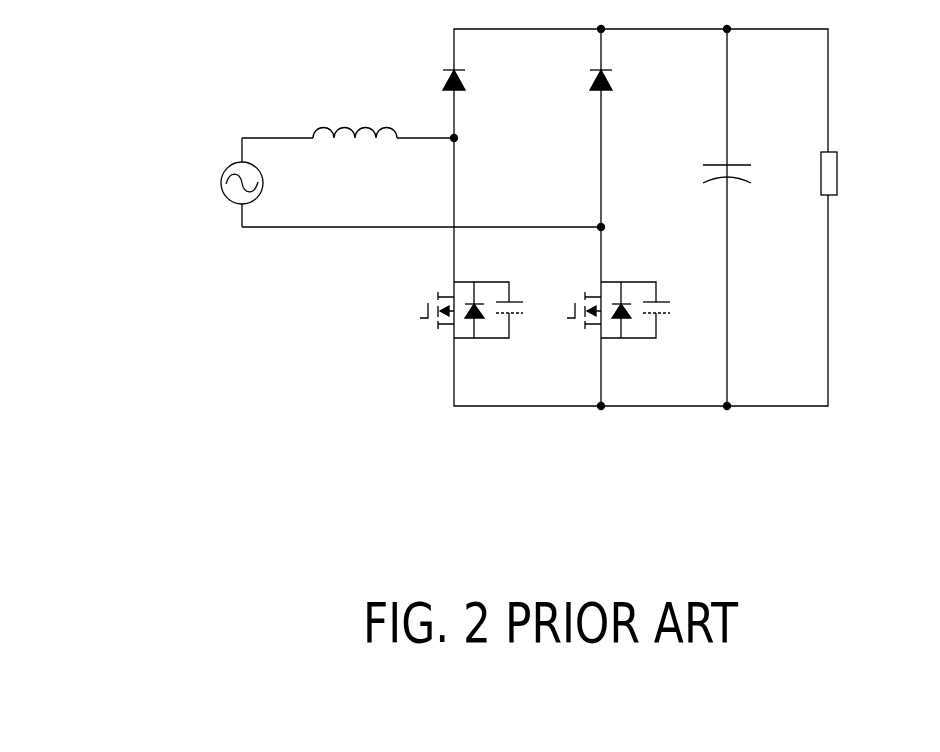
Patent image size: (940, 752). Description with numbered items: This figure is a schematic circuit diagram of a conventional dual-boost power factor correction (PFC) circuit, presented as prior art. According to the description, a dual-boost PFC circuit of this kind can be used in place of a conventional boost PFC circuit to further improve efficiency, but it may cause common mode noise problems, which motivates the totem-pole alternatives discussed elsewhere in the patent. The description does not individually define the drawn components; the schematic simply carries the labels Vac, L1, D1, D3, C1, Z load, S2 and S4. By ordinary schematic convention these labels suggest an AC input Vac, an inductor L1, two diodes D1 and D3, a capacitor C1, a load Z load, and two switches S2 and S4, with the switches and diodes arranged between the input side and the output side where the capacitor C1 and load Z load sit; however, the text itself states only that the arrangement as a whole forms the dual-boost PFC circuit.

The AC voltage source Vac is at (213, 183).
The inductor L1 is at (355, 112).
The diode D1 is at (473, 82).
The diode D3 is at (620, 82).
The output capacitor C1 is at (709, 178).
The load impedance Z load is at (865, 173).
The MOSFET switch S2 is at (461, 319).
The MOSFET switch S4 is at (607, 319).